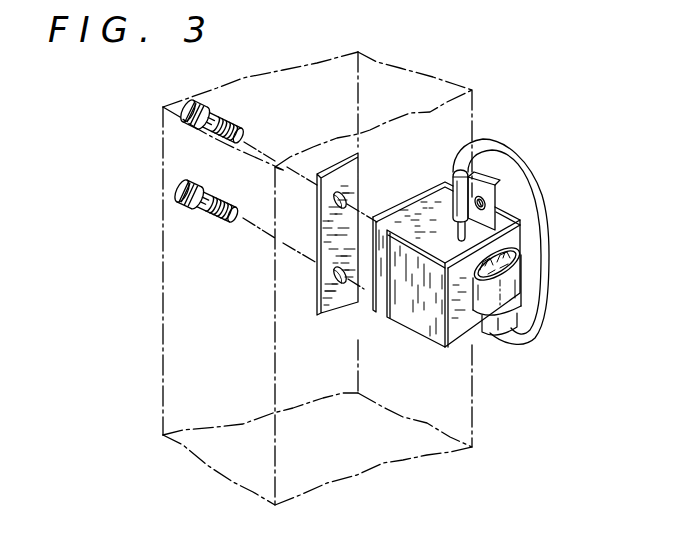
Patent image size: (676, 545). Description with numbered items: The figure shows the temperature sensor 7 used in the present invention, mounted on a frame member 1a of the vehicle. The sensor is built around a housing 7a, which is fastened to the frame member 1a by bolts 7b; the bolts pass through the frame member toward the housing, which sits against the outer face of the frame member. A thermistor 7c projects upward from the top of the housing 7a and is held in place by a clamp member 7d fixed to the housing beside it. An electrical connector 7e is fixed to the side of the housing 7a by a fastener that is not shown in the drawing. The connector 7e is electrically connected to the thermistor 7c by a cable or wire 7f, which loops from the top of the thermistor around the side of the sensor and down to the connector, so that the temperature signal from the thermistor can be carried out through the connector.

The frame member 1a is at (160, 233).
The temperature sensor 7 is at (462, 270).
The housing 7a is at (473, 330).
The bolts 7b is at (184, 199).
The thermistor 7c is at (456, 231).
The clamp member 7d is at (486, 203).
The electrical connector 7e is at (518, 298).
The cable or wire 7f is at (545, 232).